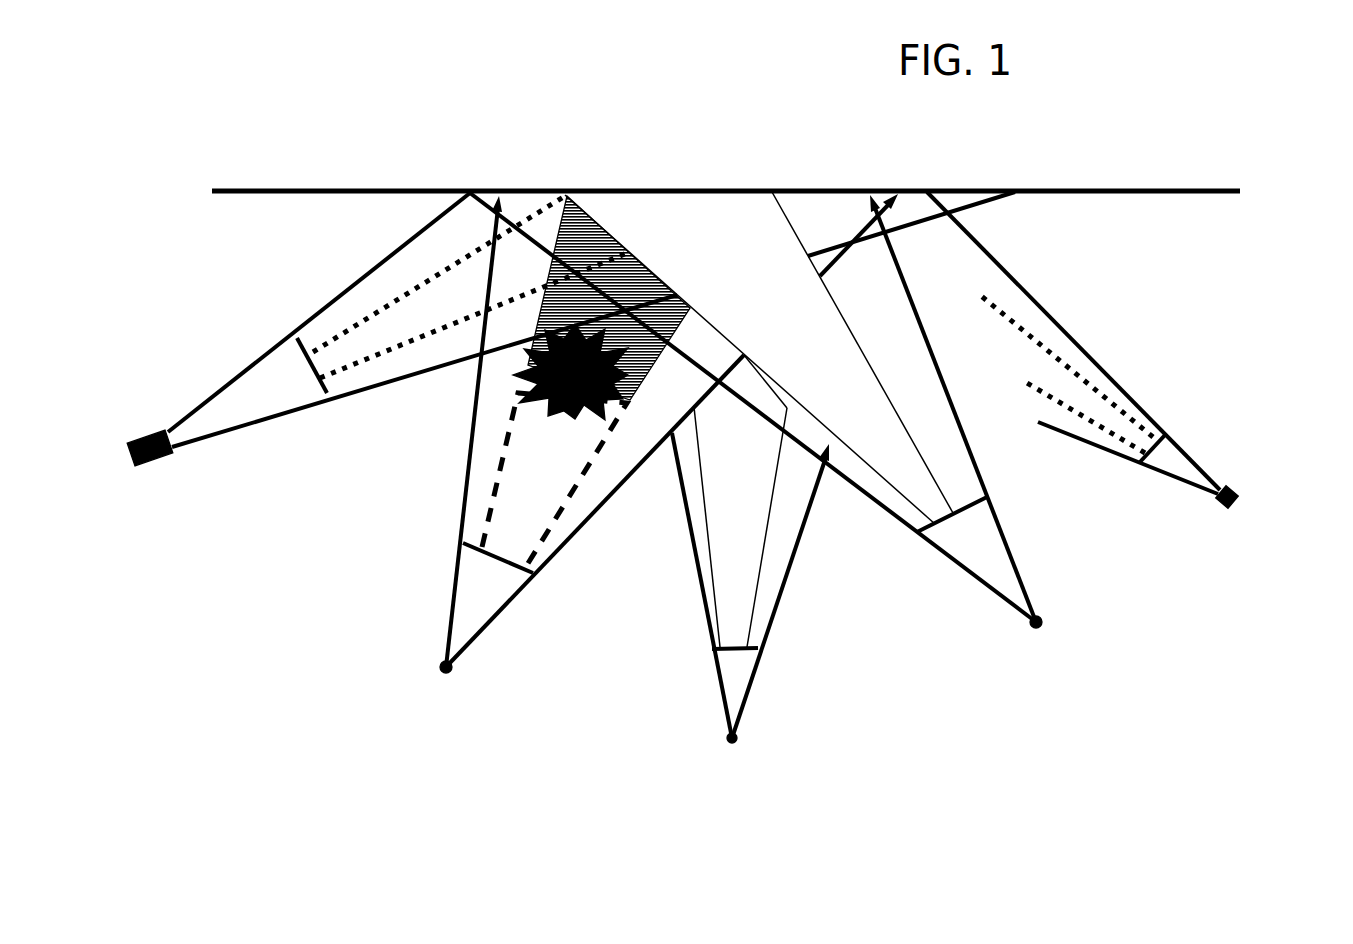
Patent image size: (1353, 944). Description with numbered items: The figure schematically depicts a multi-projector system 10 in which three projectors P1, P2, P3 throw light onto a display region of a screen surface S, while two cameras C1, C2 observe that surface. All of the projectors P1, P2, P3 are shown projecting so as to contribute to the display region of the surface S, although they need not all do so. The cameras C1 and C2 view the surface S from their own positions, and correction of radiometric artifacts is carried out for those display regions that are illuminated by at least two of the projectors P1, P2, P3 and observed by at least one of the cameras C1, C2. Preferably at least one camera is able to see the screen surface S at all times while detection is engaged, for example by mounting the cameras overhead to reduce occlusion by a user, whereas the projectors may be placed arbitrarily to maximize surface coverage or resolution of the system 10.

The multi-projector system 10 is at (548, 123).
The surface S is at (726, 163).
The camera C1 is at (566, 366).
The camera C2 is at (1114, 380).
The projector P1 is at (661, 476).
The projector P2 is at (758, 460).
The projector P3 is at (744, 597).